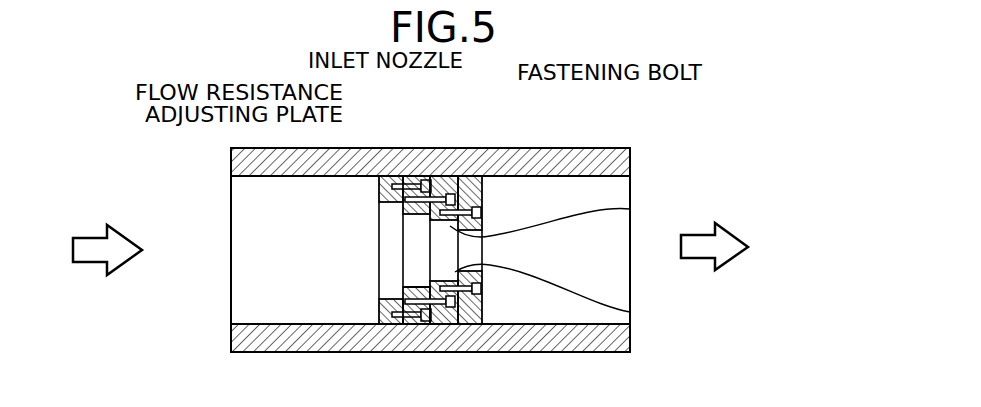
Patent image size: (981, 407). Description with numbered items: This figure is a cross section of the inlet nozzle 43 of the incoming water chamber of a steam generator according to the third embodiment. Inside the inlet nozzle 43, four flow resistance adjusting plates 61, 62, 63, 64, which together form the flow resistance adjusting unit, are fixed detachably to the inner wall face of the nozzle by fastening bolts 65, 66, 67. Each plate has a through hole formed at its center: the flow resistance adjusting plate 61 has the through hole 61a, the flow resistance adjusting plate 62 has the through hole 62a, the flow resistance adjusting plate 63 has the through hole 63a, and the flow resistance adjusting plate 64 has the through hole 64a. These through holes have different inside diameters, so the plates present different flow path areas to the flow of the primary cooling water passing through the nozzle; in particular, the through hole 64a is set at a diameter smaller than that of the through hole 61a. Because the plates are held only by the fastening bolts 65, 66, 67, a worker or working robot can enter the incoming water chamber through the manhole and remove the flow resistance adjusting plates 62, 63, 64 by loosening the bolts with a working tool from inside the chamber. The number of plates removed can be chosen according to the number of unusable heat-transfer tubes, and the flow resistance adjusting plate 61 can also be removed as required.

The inlet nozzle 43 is at (405, 176).
The flow resistance adjusting plate 61 is at (378, 190).
The through hole 61a is at (385, 298).
The flow resistance adjusting plate 62 is at (413, 320).
The through hole 62a is at (408, 285).
The flow resistance adjusting plate 63 is at (447, 176).
The through hole 63a is at (630, 209).
The flow resistance adjusting plate 64 is at (484, 288).
The through hole 64a is at (630, 312).
The fastening bolt 65 is at (424, 176).
The fastening bolt 66 is at (481, 176).
The fastening bolt 67 is at (486, 208).